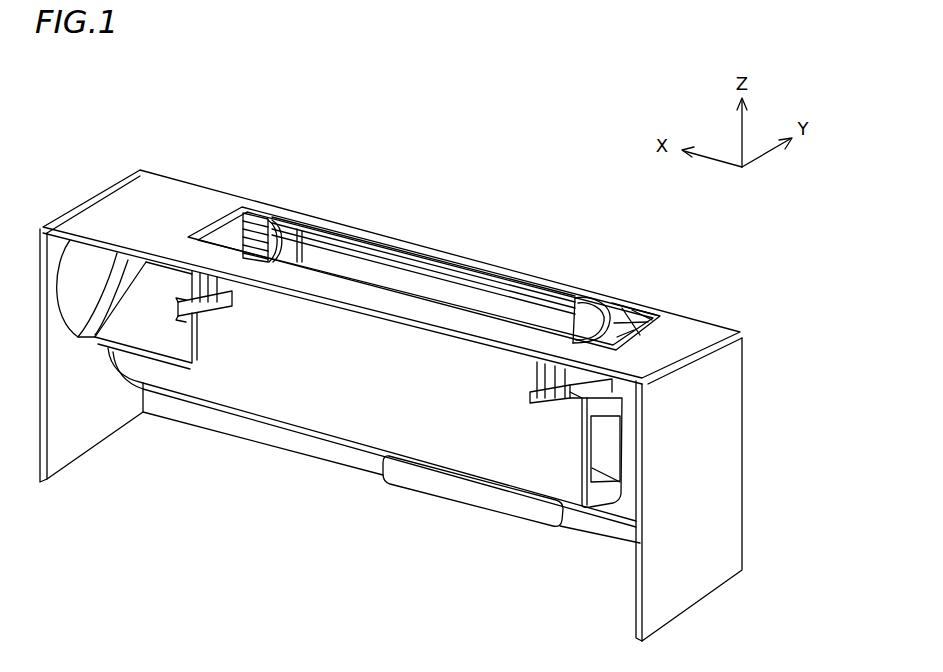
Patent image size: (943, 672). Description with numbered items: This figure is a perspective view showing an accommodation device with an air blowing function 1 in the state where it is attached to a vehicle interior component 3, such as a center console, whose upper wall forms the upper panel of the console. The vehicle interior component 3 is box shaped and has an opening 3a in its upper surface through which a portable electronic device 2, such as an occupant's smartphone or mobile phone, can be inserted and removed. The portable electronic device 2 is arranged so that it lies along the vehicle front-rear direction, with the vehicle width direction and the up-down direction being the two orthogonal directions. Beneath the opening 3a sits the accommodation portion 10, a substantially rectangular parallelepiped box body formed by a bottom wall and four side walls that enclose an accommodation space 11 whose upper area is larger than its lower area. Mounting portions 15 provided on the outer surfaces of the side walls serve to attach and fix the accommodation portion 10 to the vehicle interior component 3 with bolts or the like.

The accommodation device with air blowing function 1 is at (273, 425).
The portable electronic device 2 is at (395, 278).
The vehicle interior component 3 is at (177, 195).
The opening 3a is at (287, 200).
The accommodation portion 10 is at (355, 413).
The accommodation space 11 is at (630, 303).
The mounting portion 15 is at (222, 318).